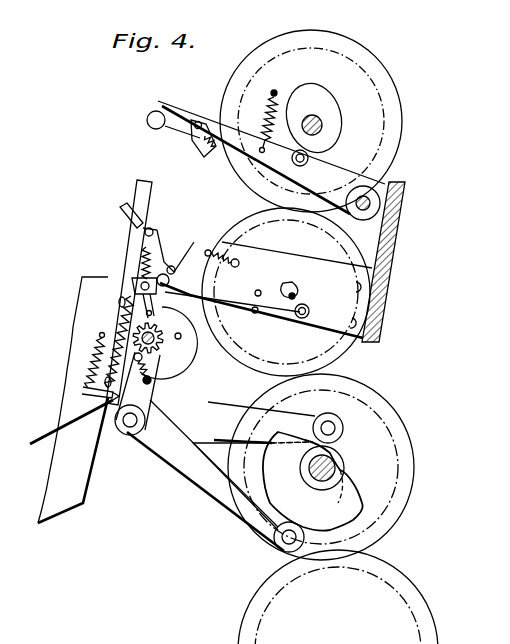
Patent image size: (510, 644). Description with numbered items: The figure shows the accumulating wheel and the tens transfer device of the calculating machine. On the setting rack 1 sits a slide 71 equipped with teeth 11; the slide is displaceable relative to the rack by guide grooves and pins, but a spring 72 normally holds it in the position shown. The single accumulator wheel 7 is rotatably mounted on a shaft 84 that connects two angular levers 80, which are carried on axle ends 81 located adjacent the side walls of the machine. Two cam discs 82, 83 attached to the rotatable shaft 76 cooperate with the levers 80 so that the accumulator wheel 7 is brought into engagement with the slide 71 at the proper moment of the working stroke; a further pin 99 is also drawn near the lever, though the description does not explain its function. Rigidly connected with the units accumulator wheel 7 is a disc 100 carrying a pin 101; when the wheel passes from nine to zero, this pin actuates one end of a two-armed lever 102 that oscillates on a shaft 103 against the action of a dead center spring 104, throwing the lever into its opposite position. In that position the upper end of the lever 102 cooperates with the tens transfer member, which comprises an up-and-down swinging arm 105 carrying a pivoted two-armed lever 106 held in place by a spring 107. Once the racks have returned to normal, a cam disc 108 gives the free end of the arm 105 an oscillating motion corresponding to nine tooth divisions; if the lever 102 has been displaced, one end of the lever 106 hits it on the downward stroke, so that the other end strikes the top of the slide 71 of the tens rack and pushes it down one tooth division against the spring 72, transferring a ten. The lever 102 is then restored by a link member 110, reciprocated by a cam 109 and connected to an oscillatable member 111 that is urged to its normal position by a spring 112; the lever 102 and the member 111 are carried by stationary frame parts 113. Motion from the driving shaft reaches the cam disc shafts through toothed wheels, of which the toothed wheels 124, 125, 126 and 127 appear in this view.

The setting rack 1 is at (58, 511).
The single accumulator wheel 7 is at (158, 340).
The teeth 11 is at (66, 427).
The slide 71 is at (116, 322).
The spring 72 is at (95, 368).
The rotatable shaft 76 is at (332, 466).
The angular lever 80 is at (150, 402).
The axle end 81 is at (128, 430).
The cam disc 82 is at (338, 503).
The cam disc 83 is at (360, 513).
The shaft 84 is at (138, 342).
The pin 99 is at (151, 381).
The disc 100 is at (172, 370).
The pin 101 is at (179, 339).
The two-armed lever 102 is at (126, 206).
The shaft 103 is at (136, 282).
The dead center spring 104 is at (146, 260).
The swinging arm 105 is at (328, 172).
The two-armed lever 106 is at (152, 123).
The spring 107 is at (211, 152).
The cam disc 108 is at (338, 117).
The cam 109 is at (284, 292).
The link member 110 is at (268, 307).
The oscillatable member 111 is at (190, 255).
The spring 112 is at (213, 250).
The stationary frame part 113 is at (345, 303).
The toothed wheel 124 is at (385, 567).
The toothed wheel 125 is at (378, 395).
The toothed wheel 126 is at (368, 251).
The toothed wheel 127 is at (399, 162).